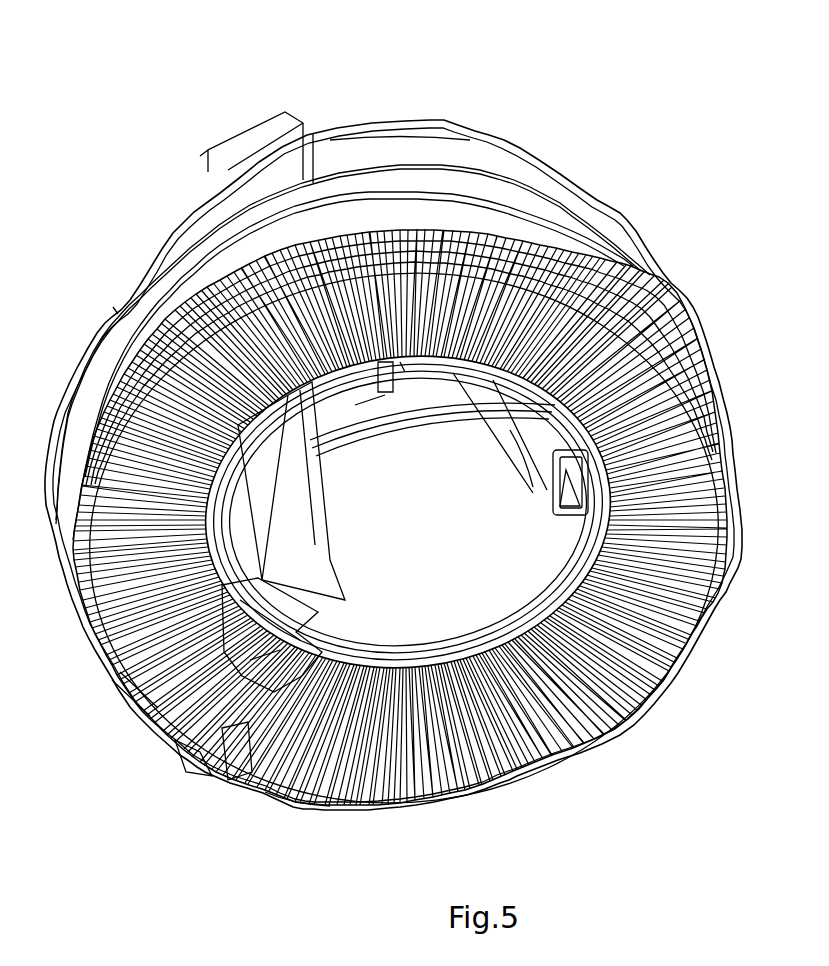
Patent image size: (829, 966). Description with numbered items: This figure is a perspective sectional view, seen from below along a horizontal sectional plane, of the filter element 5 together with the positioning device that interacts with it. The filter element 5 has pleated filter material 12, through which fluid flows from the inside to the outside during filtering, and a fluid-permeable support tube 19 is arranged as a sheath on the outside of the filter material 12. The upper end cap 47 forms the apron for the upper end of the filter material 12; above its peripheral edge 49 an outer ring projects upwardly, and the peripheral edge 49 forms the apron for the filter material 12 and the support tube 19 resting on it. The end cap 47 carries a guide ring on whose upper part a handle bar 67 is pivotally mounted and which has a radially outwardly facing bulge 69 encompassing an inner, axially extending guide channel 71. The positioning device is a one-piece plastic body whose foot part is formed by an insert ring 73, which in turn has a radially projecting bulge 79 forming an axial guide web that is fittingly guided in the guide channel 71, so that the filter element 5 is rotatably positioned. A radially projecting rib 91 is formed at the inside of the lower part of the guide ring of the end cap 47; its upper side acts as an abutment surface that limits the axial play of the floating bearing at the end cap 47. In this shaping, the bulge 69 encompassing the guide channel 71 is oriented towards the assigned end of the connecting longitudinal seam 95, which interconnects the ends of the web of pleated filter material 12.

The filter element 5 is at (655, 660).
The filter material 12 is at (737, 533).
The support tube 19 is at (627, 278).
The end cap 47 is at (523, 172).
The peripheral edge 49 is at (553, 222).
The handle bar 67 is at (455, 130).
The bulge 69 is at (187, 762).
The guide channel 71 is at (293, 805).
The insert ring 73 is at (430, 590).
The bulge 79 is at (130, 697).
The rib 91 is at (327, 635).
The longitudinal seam 95 is at (213, 772).